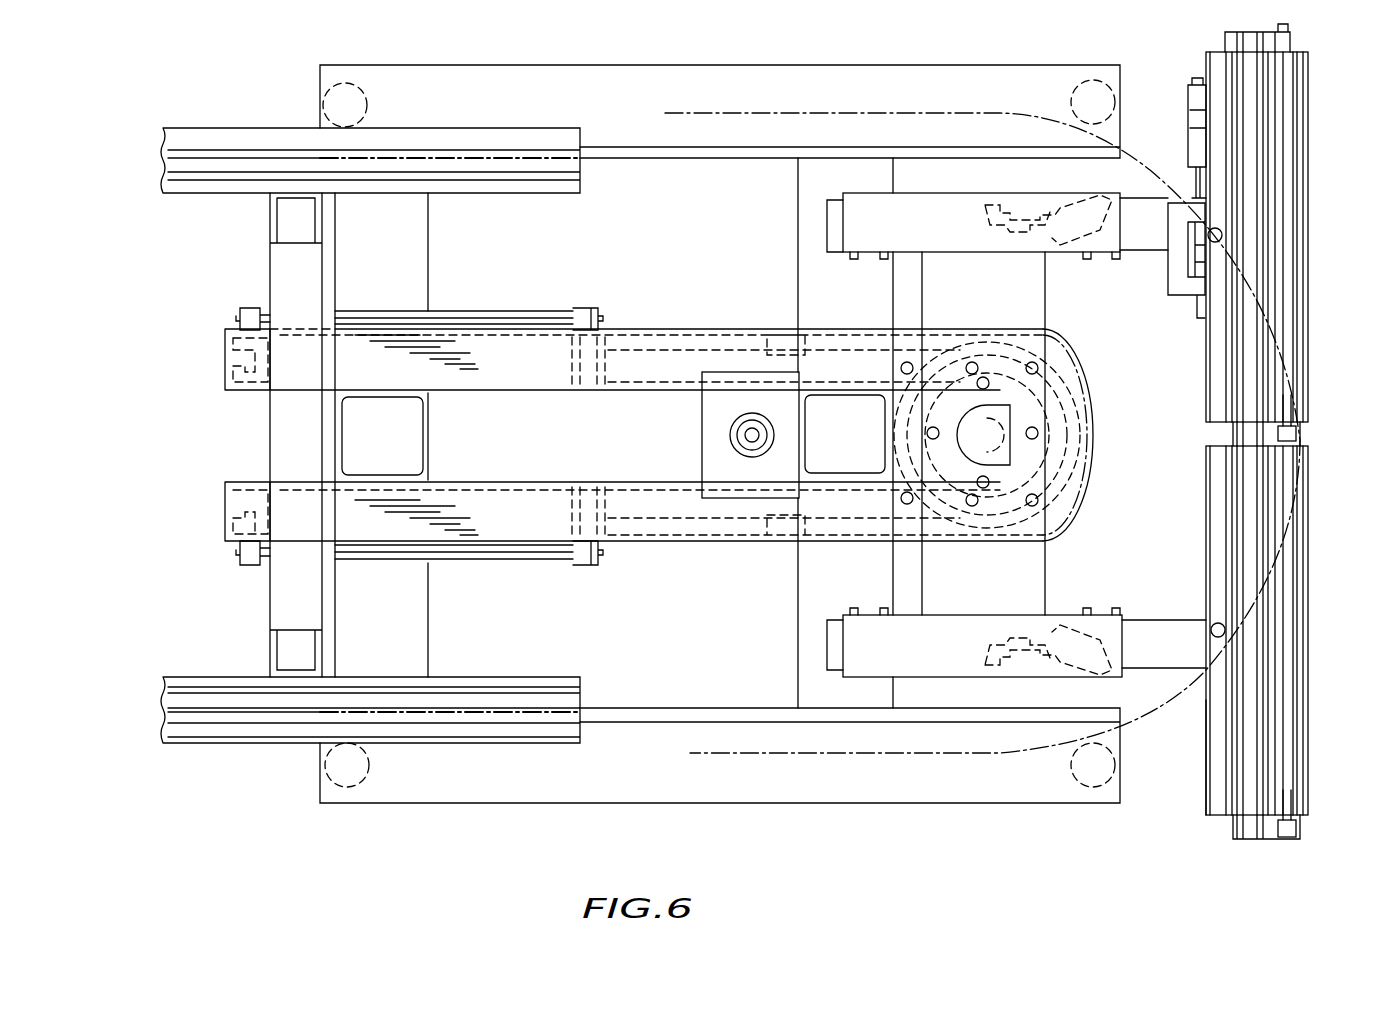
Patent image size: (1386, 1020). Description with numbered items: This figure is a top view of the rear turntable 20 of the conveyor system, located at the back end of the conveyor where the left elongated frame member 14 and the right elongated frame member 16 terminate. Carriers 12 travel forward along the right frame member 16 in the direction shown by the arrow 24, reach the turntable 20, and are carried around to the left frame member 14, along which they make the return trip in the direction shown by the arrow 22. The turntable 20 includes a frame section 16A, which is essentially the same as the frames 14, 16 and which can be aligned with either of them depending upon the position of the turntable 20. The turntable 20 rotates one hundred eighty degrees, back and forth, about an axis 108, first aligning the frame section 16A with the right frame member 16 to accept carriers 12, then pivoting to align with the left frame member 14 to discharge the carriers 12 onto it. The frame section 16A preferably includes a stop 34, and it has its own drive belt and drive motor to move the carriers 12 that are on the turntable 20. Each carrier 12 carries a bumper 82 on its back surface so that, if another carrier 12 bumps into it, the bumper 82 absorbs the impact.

The carrier 12 is at (1308, 225).
The left elongated frame member 14 is at (236, 128).
The right elongated frame member 16 is at (225, 743).
The frame section 16A is at (1206, 785).
The rear turntable 20 is at (971, 836).
The arrows 22 is at (150, 158).
The arrow 24 is at (88, 708).
The stop 34 is at (1168, 283).
The bumper 82 is at (1296, 431).
The axis 108 is at (985, 433).